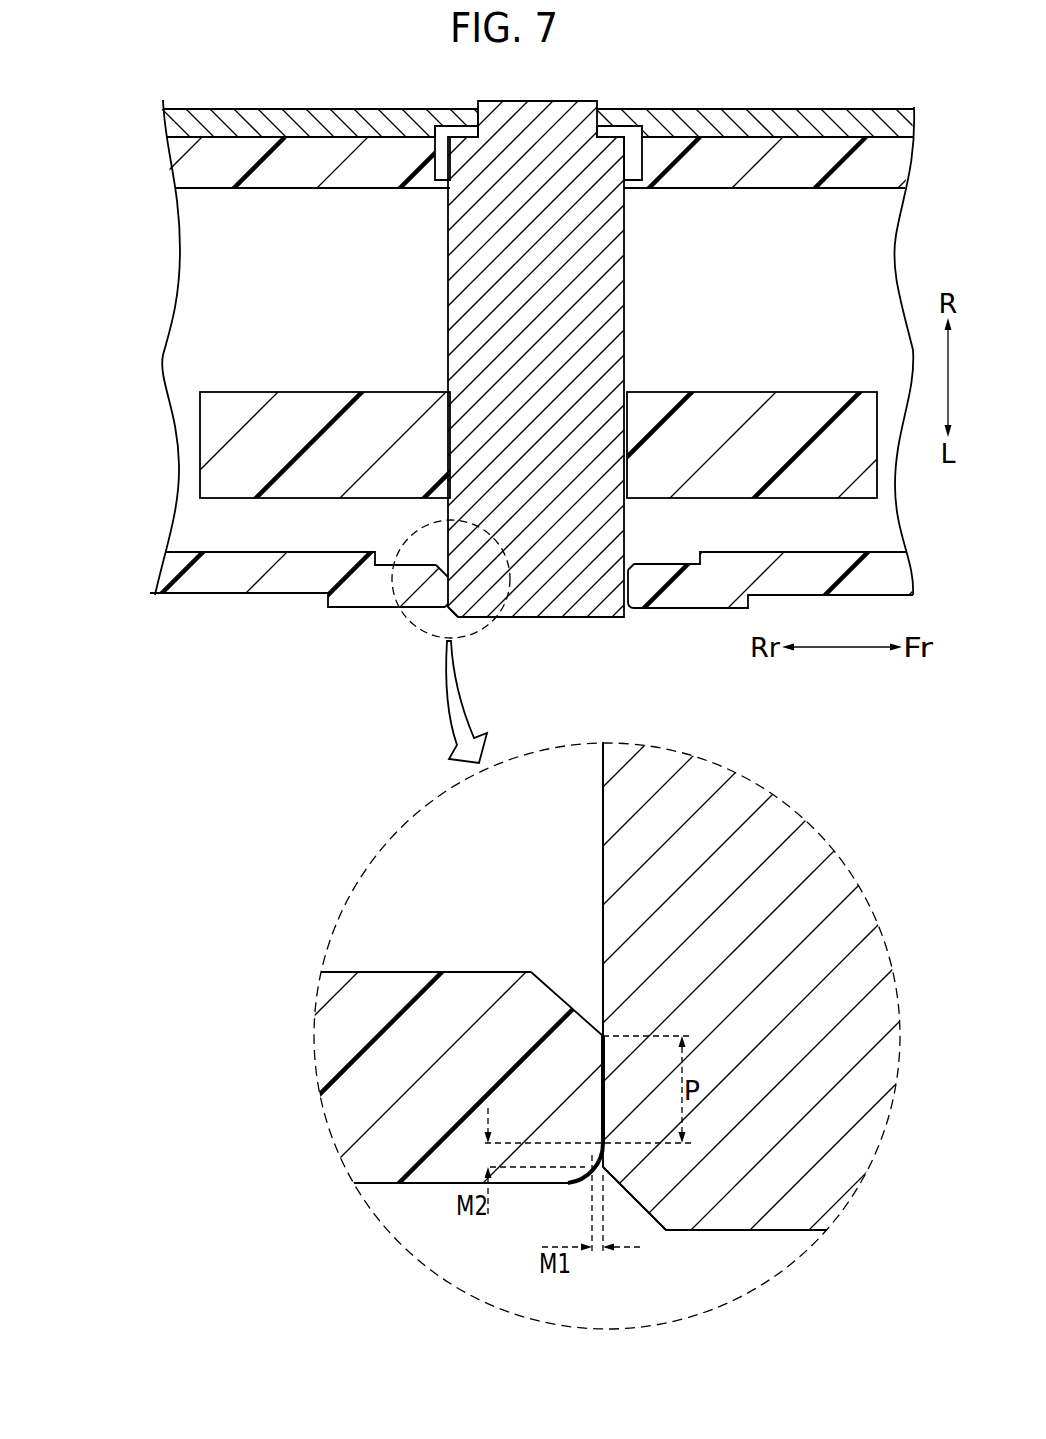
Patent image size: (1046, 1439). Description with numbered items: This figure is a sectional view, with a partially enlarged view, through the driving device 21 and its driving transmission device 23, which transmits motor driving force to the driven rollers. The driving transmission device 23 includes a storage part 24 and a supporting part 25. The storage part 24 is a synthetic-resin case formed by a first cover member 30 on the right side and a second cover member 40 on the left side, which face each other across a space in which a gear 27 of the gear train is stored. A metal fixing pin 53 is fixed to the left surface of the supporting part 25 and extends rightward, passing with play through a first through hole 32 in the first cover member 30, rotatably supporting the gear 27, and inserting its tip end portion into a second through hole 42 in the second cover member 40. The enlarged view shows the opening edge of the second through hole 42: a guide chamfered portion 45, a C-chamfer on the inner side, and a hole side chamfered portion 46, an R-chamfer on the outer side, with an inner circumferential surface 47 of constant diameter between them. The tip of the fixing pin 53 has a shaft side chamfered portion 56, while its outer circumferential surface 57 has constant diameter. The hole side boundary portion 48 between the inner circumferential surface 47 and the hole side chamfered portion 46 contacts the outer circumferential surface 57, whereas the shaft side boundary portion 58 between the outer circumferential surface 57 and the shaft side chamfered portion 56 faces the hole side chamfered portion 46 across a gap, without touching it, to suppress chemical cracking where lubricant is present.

The driving device 21 is at (108, 97).
The driving transmission device 23 is at (126, 142).
The storage part 24 is at (153, 220).
The supporting part 25 is at (372, 126).
The gear 27 is at (373, 410).
The first cover member 30 is at (375, 165).
The first through hole 32 is at (646, 183).
The second cover member 40 is at (268, 580).
The second through hole 42 is at (621, 600).
The guide chamfered portion 45 is at (444, 557).
The hole side chamfered portion 46 is at (445, 613).
The inner circumferential surface 47 is at (597, 1031).
The hole side boundary portion 48 is at (596, 1136).
The fixing pin 53 is at (628, 290).
The shaft side chamfered portion 56 is at (458, 623).
The outer circumferential surface 57 is at (593, 906).
The shaft side boundary portion 58 is at (615, 1166).